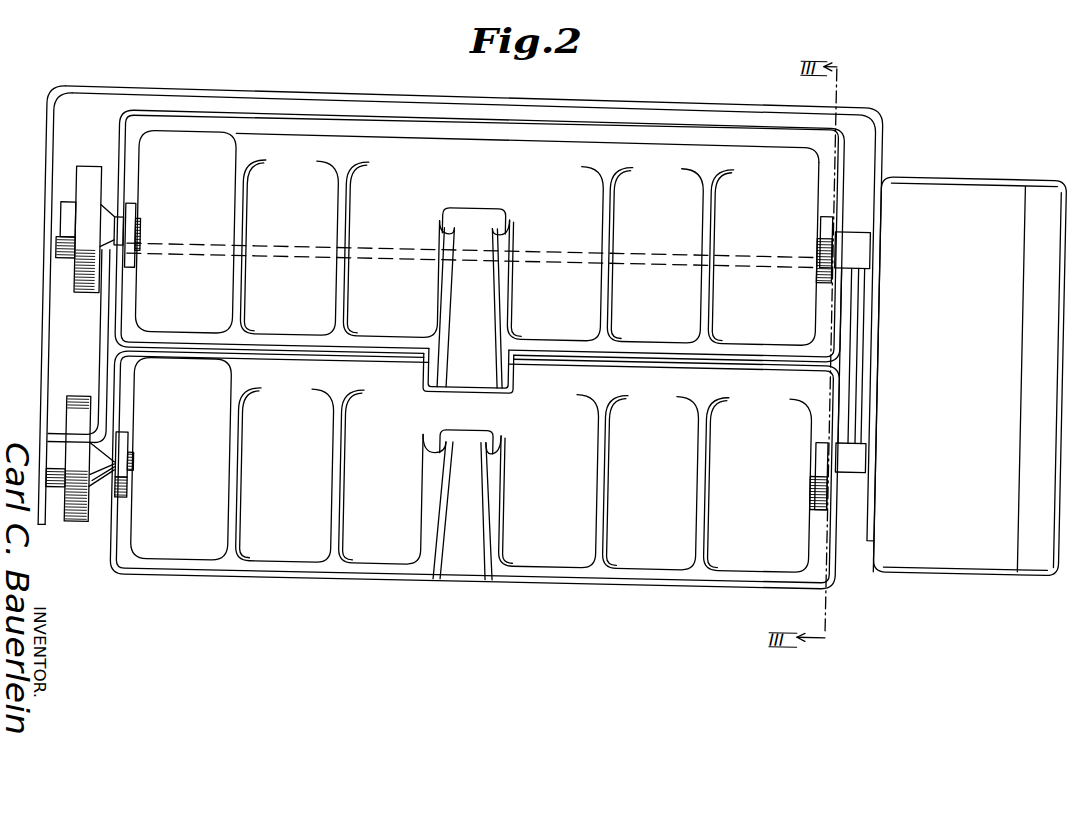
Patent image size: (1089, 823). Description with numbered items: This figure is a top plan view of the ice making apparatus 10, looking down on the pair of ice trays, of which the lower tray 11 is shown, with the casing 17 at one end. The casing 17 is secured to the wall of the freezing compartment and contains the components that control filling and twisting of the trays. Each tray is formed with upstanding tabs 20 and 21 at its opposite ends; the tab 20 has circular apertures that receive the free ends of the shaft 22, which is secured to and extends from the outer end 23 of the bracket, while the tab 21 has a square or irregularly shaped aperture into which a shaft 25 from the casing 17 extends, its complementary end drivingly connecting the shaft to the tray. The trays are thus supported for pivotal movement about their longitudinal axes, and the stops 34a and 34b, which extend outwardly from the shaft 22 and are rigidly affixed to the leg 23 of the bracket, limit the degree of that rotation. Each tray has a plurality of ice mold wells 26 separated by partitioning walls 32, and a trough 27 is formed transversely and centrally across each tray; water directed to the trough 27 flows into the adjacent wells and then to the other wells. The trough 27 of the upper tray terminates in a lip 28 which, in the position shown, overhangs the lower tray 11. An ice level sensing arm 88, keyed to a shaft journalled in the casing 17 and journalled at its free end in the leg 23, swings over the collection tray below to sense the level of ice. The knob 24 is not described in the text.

The ice making apparatus 10 is at (882, 133).
The ice tray 11 is at (411, 576).
The casing 17 is at (968, 384).
The tab 20 is at (131, 208).
The tab 21 is at (828, 210).
The shaft 22 is at (138, 230).
The outer end of the bracket 23 is at (46, 348).
The knob 24 is at (815, 460).
The shaft 25 is at (818, 231).
The ice mold well 26 is at (403, 304).
The trough 27 is at (474, 309).
The lip 28 is at (437, 365).
The partitioning wall 32 is at (336, 216).
The stop 34a is at (78, 459).
The stop 34b is at (84, 181).
The ice level sensing arm 88 is at (629, 259).